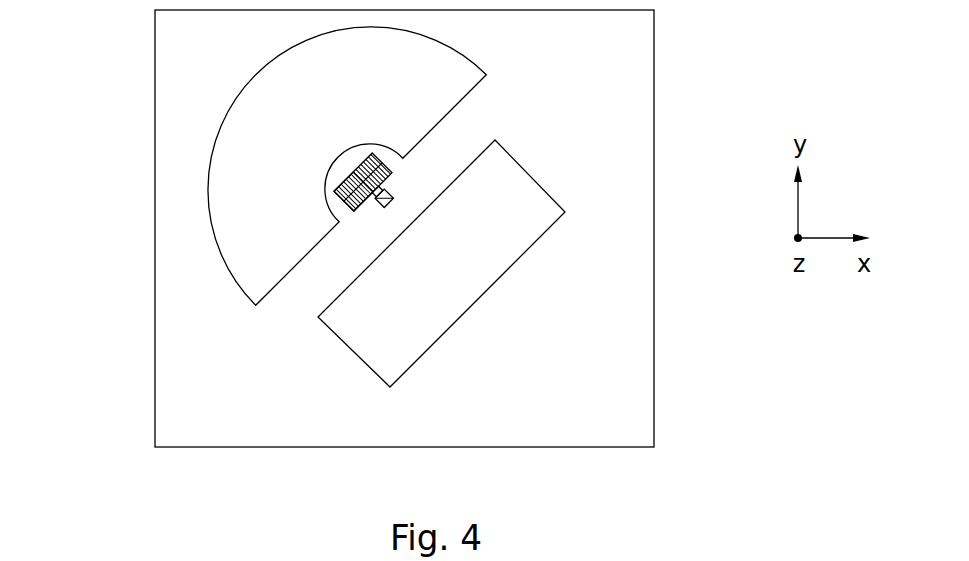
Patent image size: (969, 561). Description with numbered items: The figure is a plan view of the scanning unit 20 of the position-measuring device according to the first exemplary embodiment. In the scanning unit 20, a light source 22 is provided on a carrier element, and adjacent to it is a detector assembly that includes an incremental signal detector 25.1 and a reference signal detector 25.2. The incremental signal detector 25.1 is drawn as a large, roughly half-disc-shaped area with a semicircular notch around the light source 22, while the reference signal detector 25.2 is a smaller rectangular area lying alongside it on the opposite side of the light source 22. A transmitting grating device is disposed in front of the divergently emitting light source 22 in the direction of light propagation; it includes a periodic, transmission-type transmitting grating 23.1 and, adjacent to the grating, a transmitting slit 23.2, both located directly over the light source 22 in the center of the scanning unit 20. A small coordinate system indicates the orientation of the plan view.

The scanning unit 20 is at (121, 101).
The light source 22 is at (393, 187).
The transmitting grating 23.1 is at (328, 202).
The transmitting slit 23.2 is at (390, 205).
The incremental signal detector 25.1 is at (242, 258).
The reference signal detector 25.2 is at (497, 265).